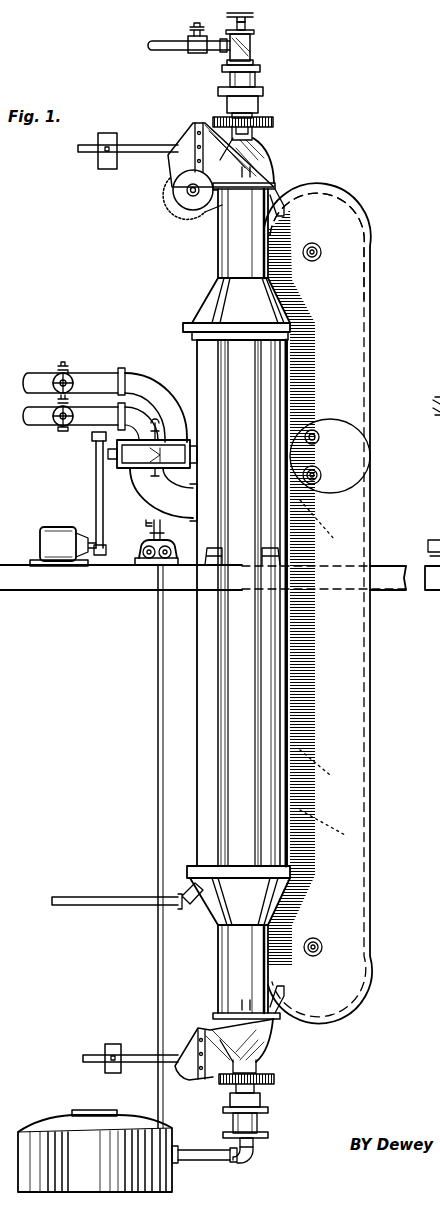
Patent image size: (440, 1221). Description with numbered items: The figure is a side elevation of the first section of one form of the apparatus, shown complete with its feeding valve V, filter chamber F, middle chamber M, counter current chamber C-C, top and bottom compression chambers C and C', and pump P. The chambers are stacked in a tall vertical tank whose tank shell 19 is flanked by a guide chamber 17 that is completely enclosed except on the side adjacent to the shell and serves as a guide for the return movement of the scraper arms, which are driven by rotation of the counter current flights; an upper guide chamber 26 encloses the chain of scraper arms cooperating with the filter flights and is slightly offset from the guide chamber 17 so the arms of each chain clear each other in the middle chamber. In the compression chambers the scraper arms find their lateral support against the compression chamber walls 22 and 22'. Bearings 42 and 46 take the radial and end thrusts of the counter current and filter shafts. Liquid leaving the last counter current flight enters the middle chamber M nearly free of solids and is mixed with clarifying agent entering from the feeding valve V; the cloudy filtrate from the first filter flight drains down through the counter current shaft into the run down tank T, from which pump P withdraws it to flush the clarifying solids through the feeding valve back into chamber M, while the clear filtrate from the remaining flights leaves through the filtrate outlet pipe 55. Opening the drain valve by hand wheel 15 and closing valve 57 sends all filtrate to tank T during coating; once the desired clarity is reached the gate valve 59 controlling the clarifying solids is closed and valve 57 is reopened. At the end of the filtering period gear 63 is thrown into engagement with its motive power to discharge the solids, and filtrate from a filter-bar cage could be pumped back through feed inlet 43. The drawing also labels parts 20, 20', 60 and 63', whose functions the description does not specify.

The hand wheel 15 is at (250, 14).
The filtrate outlet pipe 55 is at (152, 42).
The valve 57 is at (198, 53).
The bearing 46 is at (258, 102).
The gear 63 is at (263, 135).
The top compression chamber C is at (210, 179).
The compression chamber wall 22 is at (211, 222).
The upper conical head 20 is at (214, 300).
The upper guide chamber 26 is at (364, 299).
The gate valve 59 is at (63, 362).
The filter chamber F is at (245, 362).
The lower inlet pipe valve 60 is at (63, 431).
The feeding valve V is at (135, 455).
The middle chamber M is at (240, 501).
The pump P is at (148, 553).
The counter current chamber C-C is at (248, 664).
The tank shell 19 is at (197, 734).
The guide chamber 17 is at (362, 734).
The feed inlet 43 is at (192, 892).
The lower conical head 20' is at (196, 919).
The bottom compression chamber C' is at (232, 1008).
The compression chamber wall 22' is at (193, 972).
The lower gear 63' is at (269, 1071).
The bearing 42 is at (262, 1098).
The run down tank T is at (60, 1127).